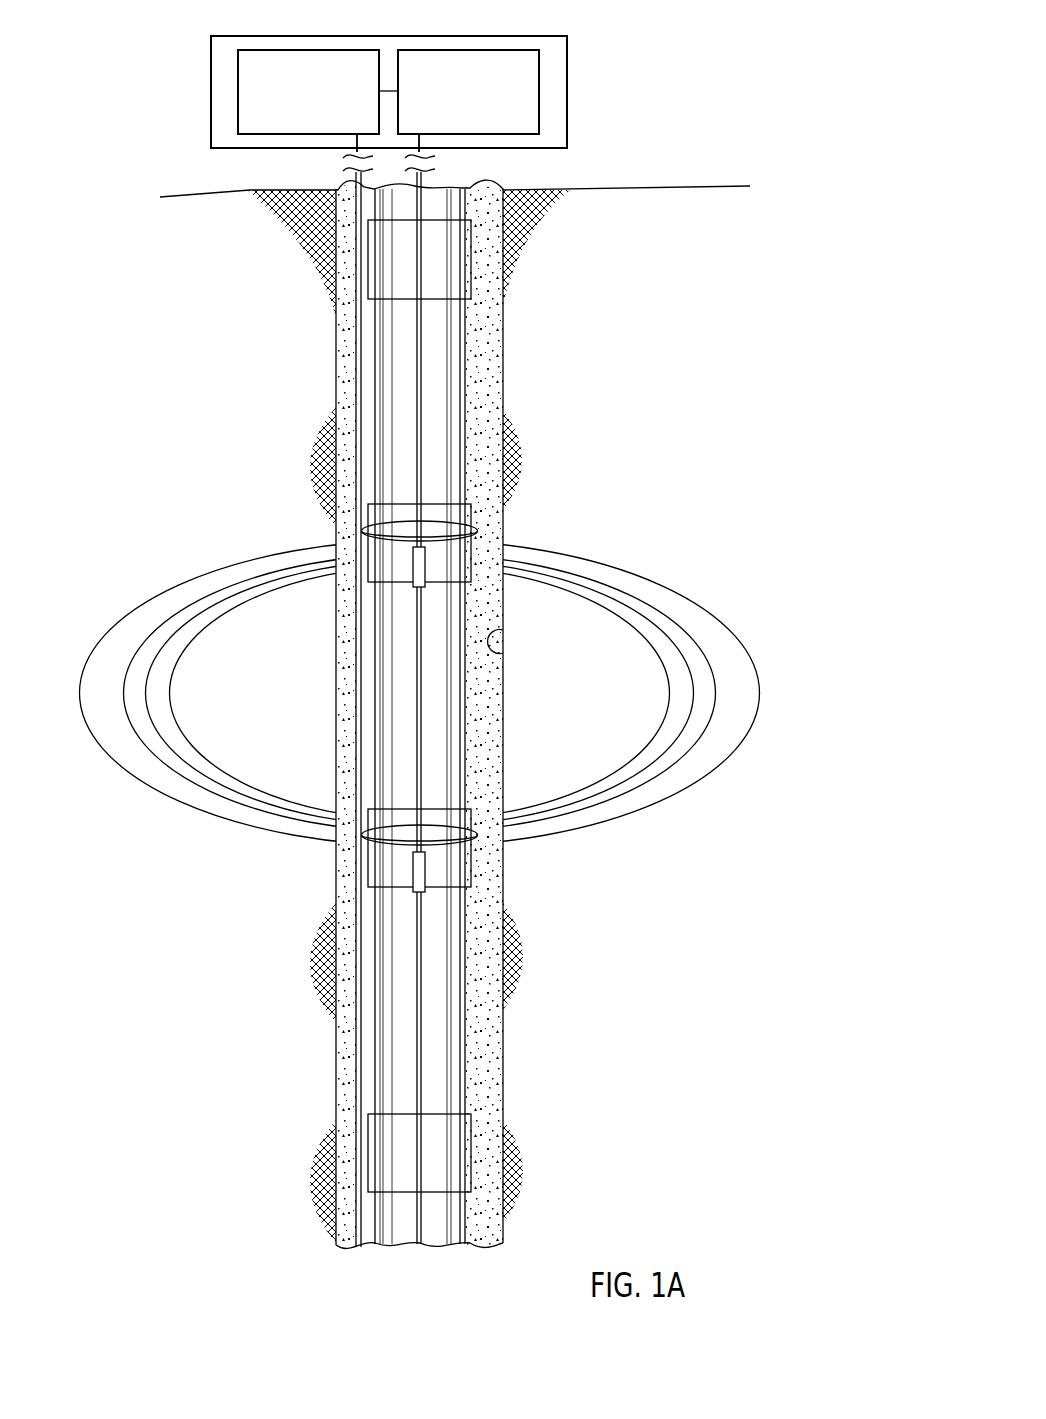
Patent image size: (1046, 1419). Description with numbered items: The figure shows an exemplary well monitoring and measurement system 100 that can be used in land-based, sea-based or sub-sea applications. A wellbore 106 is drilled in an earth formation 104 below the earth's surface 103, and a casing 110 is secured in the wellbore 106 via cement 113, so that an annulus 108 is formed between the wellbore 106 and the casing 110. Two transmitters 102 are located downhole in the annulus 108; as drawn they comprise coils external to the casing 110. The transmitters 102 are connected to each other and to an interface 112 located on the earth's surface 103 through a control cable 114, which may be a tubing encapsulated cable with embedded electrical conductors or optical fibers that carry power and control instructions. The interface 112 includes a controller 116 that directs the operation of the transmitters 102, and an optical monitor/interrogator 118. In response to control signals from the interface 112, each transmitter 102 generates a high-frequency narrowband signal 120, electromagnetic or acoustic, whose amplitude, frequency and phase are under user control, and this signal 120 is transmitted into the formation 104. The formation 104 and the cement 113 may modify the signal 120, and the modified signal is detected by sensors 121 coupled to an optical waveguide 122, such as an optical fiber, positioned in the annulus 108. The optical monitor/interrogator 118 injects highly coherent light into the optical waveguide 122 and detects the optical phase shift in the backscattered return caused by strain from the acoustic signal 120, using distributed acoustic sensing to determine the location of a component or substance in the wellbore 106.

The well monitoring and measurement system 100 is at (770, 84).
The transmitter 102 is at (478, 530).
The earth's surface 103 is at (688, 187).
The earth formation 104 is at (655, 528).
The wellbore 106 is at (503, 656).
The annulus 108 is at (490, 757).
The casing 110 is at (468, 705).
The interface 112 is at (567, 52).
The cement 113 is at (492, 1053).
The control cable 114 is at (348, 376).
The controller 116 is at (325, 104).
The optical monitor/interrogator 118 is at (484, 104).
The narrowband signal 120 is at (707, 775).
The sensor 121 is at (427, 575).
The optical waveguide 122 is at (423, 408).